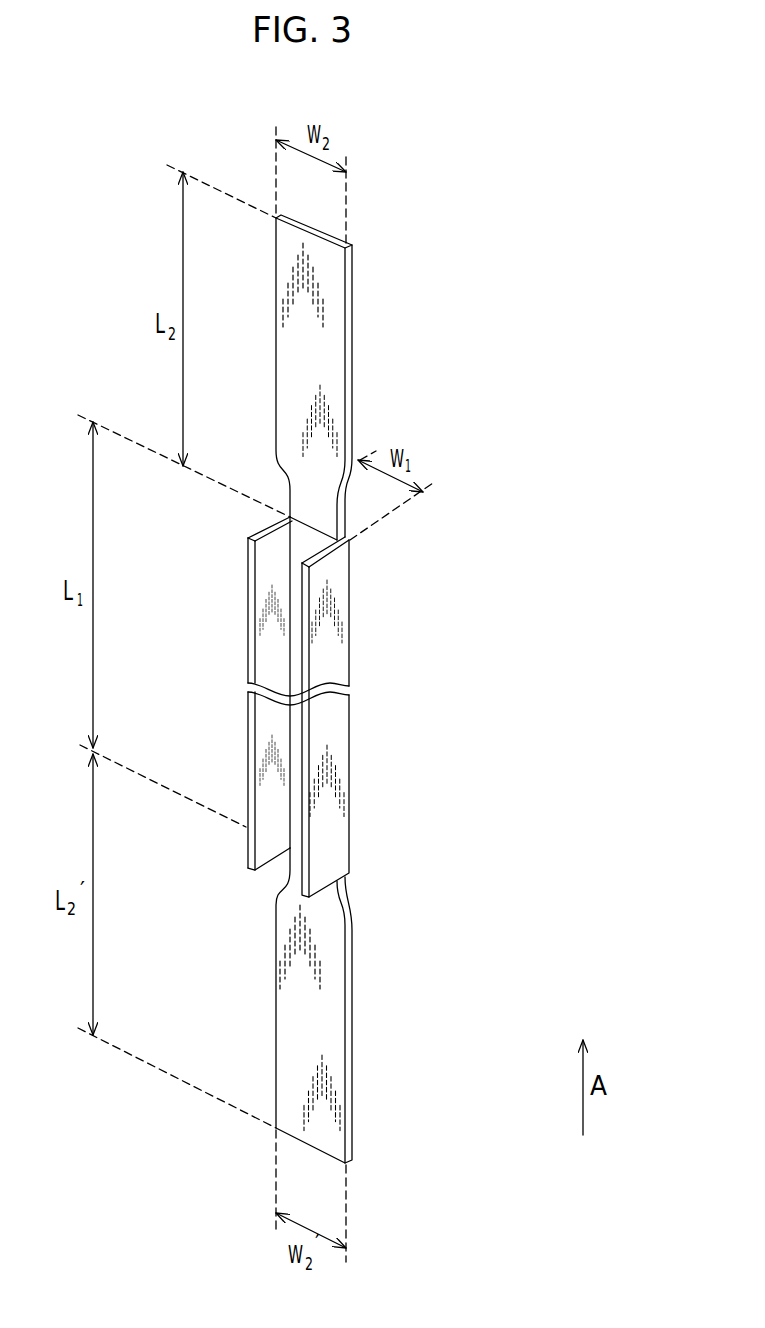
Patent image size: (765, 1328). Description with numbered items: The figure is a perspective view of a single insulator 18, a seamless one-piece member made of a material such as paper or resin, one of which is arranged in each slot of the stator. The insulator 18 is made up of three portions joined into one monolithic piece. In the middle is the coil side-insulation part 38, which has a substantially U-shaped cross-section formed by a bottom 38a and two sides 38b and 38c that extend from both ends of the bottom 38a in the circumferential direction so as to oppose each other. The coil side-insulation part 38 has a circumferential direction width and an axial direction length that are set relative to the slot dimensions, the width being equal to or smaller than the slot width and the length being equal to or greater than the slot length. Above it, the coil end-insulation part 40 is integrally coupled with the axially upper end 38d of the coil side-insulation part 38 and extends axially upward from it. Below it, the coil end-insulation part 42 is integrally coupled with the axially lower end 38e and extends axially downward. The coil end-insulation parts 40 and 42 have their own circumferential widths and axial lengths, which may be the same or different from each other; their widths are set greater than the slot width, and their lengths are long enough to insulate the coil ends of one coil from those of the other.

The insulator 18 is at (485, 216).
The coil side-insulation part 38 is at (370, 668).
The bottom 38a is at (300, 548).
The side 38b is at (253, 608).
The side 38c is at (332, 633).
The axially upper end 38d is at (308, 520).
The axially lower end 38e is at (290, 848).
The coil end-insulation part 40 is at (322, 365).
The coil end-insulation part 42 is at (323, 1013).